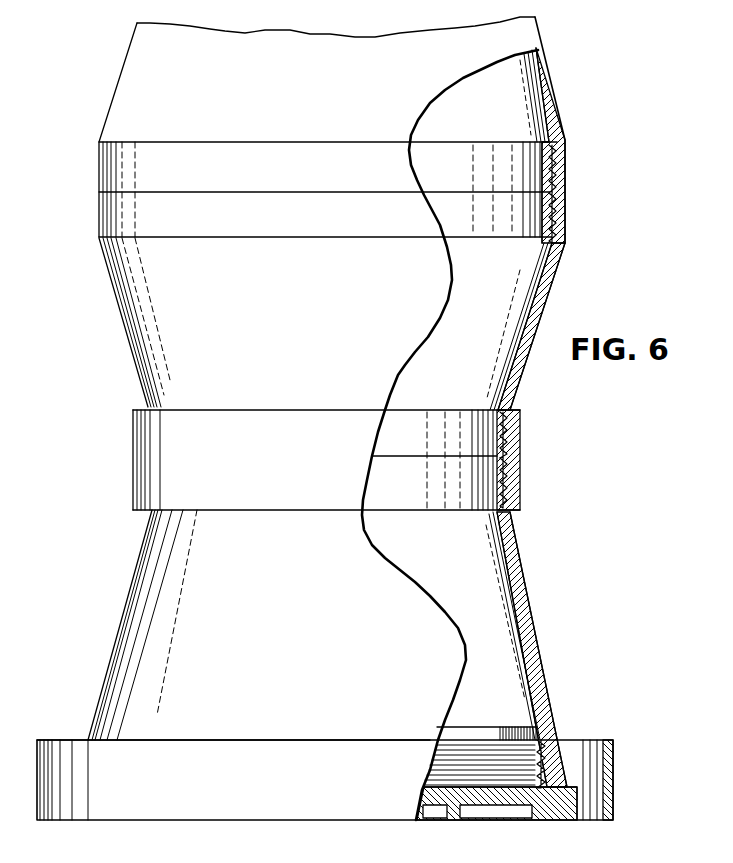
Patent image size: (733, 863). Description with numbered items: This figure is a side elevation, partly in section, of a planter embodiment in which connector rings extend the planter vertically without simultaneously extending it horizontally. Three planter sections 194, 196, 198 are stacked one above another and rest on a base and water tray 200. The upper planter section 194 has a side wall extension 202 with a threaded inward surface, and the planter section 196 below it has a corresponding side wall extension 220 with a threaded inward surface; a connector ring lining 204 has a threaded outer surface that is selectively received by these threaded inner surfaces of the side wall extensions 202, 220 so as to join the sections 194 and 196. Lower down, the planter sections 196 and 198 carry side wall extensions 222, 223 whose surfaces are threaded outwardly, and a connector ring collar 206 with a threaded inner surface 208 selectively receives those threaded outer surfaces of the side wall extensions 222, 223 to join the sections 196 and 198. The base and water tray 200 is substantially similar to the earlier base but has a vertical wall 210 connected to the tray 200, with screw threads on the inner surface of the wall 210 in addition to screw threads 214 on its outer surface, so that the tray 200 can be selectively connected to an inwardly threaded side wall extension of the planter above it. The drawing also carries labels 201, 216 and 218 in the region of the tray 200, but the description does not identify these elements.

The planter section 194 is at (279, 72).
The planter section 196 is at (289, 318).
The planter section 198 is at (265, 611).
The base and water tray 200 is at (614, 786).
The base flange 201 is at (276, 752).
The side wall extension 202 is at (551, 130).
The connector ring lining 204 is at (548, 160).
The connector ring collar 206 is at (353, 458).
The threaded inner surface 208 is at (497, 487).
The vertical wall 210 is at (534, 703).
The screw threads 214 is at (556, 760).
The bottom plate 216 is at (497, 818).
The recess 218 is at (453, 810).
The side wall extension 220 is at (548, 243).
The side wall extension 222 is at (498, 425).
The side wall extension 223 is at (507, 458).